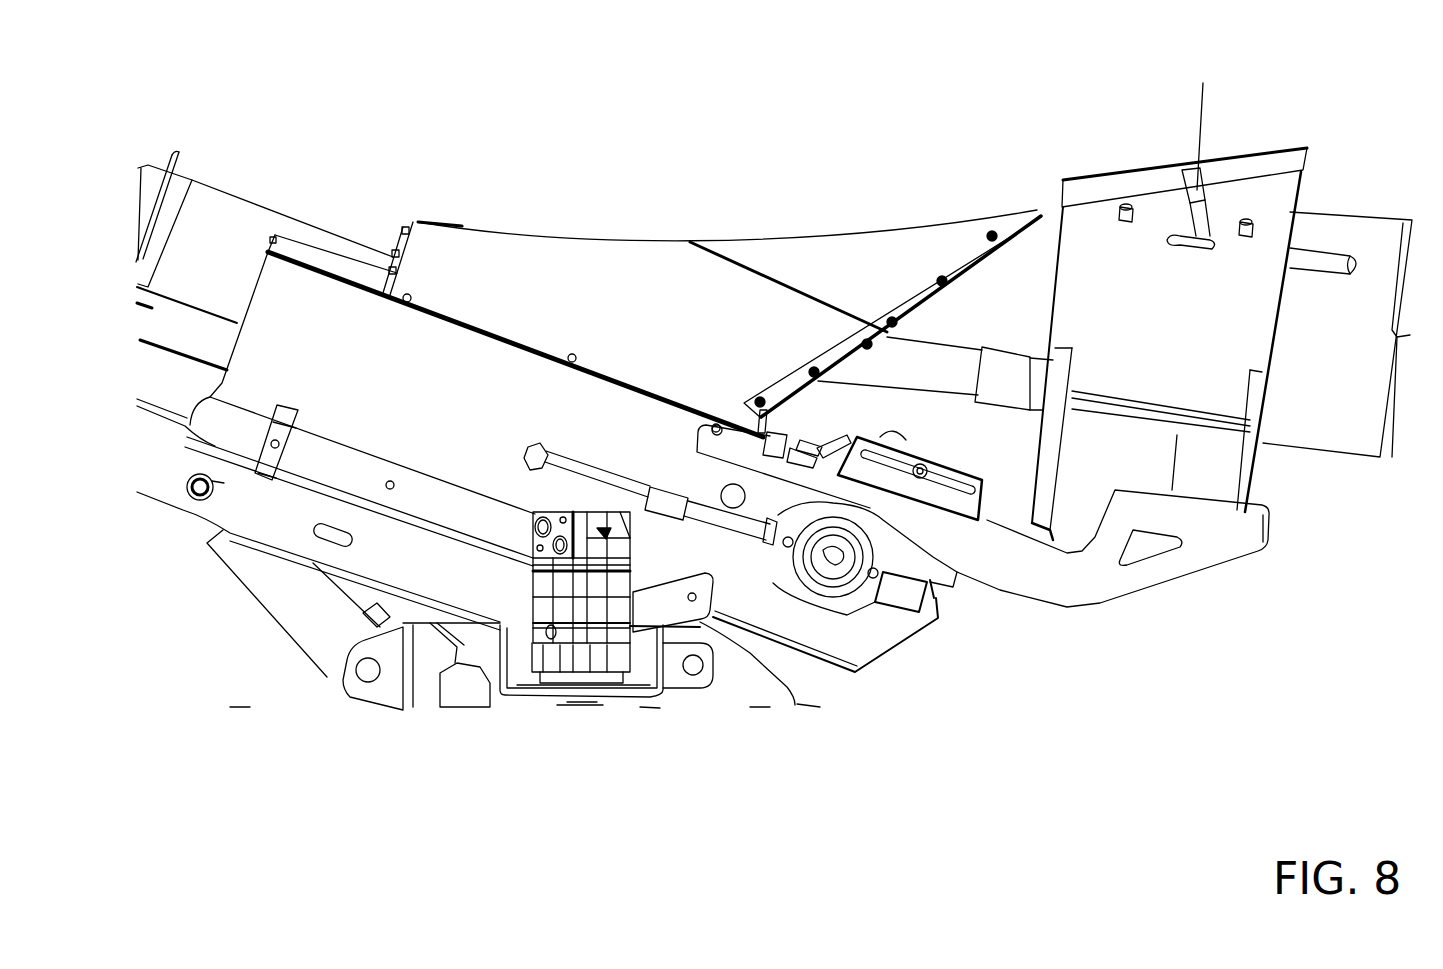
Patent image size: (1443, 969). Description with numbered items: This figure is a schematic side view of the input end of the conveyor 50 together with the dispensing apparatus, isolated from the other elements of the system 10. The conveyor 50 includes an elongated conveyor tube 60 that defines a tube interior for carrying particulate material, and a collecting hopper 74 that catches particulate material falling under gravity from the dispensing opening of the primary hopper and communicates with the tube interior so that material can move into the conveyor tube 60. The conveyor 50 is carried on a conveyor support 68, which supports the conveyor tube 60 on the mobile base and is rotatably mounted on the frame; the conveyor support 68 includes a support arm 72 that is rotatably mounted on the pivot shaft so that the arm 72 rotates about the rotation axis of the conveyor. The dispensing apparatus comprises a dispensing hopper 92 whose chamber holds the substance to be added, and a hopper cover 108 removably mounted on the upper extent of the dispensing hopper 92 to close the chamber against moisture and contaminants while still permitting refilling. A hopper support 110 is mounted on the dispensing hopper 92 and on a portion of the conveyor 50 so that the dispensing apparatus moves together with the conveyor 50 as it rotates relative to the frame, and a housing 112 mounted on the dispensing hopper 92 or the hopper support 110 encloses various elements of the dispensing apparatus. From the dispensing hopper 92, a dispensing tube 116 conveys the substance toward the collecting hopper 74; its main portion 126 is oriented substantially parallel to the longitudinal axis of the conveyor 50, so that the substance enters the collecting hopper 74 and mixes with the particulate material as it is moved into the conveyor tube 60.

The conveyor 50 is at (450, 153).
The conveyor tube 60 is at (235, 202).
The collecting hopper 74 is at (622, 216).
The dispensing tube 116 is at (920, 350).
The main portion 126 is at (920, 395).
The support arm 72 is at (290, 527).
The conveyor support 68 is at (930, 685).
The hopper support 110 is at (997, 570).
The dispensing hopper 92 is at (1270, 203).
The hopper cover 108 is at (1113, 170).
The system 10 is at (1230, 100).
The housing 112 is at (1330, 423).